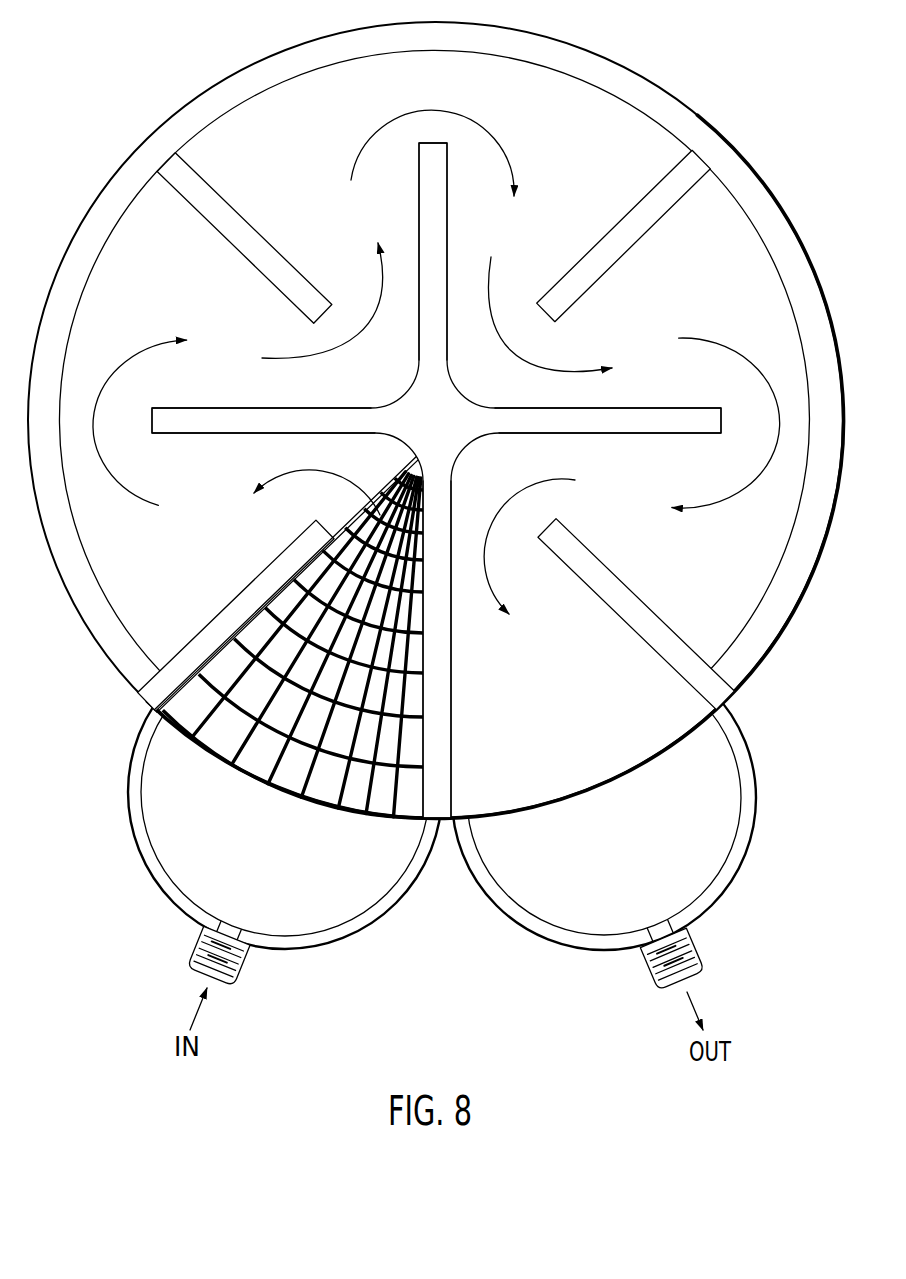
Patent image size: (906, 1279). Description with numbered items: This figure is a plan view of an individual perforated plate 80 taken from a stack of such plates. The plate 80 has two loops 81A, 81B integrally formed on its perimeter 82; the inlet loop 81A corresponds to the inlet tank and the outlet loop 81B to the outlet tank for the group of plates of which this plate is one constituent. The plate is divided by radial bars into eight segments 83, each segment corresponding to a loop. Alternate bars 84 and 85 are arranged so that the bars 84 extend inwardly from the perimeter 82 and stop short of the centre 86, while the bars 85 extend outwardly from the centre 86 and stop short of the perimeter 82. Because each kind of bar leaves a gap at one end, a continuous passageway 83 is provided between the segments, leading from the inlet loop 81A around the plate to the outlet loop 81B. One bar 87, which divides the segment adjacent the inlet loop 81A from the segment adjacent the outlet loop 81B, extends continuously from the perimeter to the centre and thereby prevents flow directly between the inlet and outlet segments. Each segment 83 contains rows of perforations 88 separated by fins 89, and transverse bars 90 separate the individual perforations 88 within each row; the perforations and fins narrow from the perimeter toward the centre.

The perforated plate 80 is at (734, 132).
The inlet loop 81A is at (133, 787).
The outlet loop 81B is at (742, 849).
The perimeter 82 is at (787, 632).
The segment 83 is at (581, 201).
The bar 84 is at (254, 233).
The bar 85 is at (437, 253).
The centre 86 is at (421, 432).
The bar 87 is at (440, 677).
The perforations 88 is at (322, 582).
The fins 89 is at (161, 711).
The transverse bars 90 is at (290, 734).